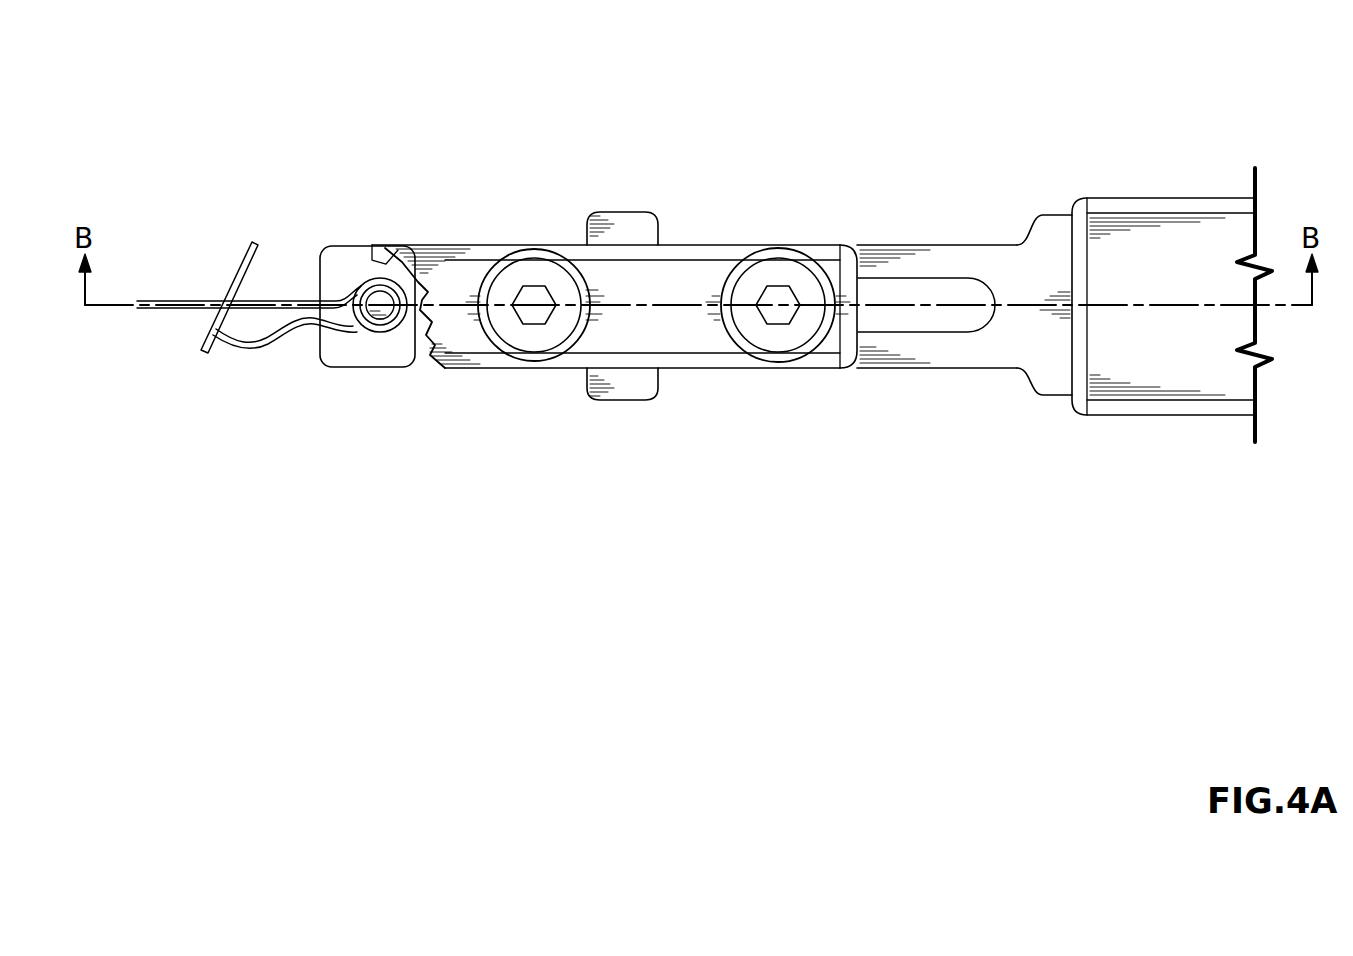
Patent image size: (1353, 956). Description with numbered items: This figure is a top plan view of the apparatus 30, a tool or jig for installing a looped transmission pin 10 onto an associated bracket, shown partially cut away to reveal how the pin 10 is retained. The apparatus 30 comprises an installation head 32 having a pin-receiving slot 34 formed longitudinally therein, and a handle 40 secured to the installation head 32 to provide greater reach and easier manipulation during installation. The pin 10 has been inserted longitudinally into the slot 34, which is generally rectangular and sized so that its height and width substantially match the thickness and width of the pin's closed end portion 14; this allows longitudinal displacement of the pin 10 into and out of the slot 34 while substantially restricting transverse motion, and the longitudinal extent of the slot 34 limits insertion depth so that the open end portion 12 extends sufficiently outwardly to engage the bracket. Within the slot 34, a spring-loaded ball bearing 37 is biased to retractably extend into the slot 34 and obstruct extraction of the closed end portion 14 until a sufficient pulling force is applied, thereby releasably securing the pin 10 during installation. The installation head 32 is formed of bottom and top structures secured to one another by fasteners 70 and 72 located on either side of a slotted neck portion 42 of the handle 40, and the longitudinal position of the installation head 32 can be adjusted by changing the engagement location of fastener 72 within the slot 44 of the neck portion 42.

The apparatus 30 is at (872, 98).
The transmission pin 10 is at (288, 340).
The open end portion 12 is at (176, 339).
The closed end portion 14 is at (395, 282).
The installation head 32 is at (561, 245).
The pin-receiving slot 34 is at (330, 342).
The spring-loaded ball bearing 37 is at (374, 320).
The handle 40 is at (1127, 198).
The slotted neck portion 42 is at (970, 245).
The slot 44 is at (906, 293).
The fastener 70 is at (552, 278).
The fastener 72 is at (778, 278).